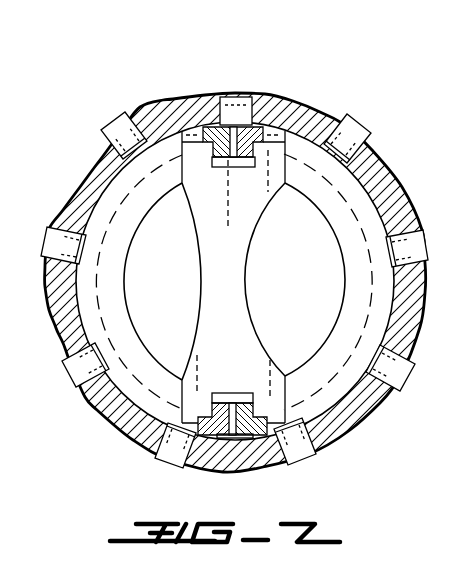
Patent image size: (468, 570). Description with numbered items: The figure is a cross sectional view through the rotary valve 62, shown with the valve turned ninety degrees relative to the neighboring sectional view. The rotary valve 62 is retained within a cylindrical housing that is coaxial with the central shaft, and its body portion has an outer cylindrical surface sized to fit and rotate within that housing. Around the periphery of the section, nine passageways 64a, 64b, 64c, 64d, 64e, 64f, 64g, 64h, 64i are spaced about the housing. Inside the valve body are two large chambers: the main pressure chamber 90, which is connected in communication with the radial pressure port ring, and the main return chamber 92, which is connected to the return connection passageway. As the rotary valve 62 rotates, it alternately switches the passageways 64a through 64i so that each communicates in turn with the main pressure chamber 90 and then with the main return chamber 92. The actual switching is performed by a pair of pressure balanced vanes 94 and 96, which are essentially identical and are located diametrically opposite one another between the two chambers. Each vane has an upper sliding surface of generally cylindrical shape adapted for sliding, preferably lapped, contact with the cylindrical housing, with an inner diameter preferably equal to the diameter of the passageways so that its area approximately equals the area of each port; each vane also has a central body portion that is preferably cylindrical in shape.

The rotary valve 62 is at (317, 114).
The passageway 64a is at (236, 100).
The passageway 64b is at (360, 138).
The passageway 64c is at (420, 240).
The passageway 64d is at (396, 392).
The passageway 64e is at (312, 455).
The passageway 64f is at (167, 452).
The passageway 64g is at (70, 384).
The passageway 64h is at (50, 230).
The passageway 64i is at (123, 128).
The main pressure chamber 90 is at (170, 297).
The main return chamber 92 is at (307, 306).
The pressure balanced vane 94 is at (270, 440).
The pressure balanced vane 96 is at (212, 125).